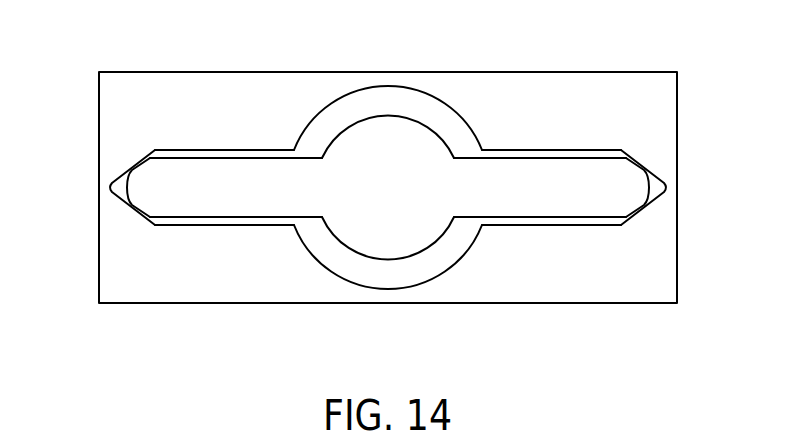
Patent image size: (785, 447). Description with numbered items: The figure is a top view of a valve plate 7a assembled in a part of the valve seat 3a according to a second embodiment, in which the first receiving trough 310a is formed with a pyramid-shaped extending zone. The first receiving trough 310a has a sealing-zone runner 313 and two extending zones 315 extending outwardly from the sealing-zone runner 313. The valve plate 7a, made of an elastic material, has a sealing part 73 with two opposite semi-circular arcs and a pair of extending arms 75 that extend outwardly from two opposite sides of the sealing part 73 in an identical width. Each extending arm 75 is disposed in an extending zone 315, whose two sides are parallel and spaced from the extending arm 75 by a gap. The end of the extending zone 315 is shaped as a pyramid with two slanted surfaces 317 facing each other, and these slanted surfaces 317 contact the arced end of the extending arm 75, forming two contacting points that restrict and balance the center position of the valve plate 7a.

The valve seat 3a is at (642, 88).
The valve plate 7a is at (388, 191).
The first receiving trough 310a is at (392, 152).
The sealing-zone runner 313 is at (388, 87).
The extending zone 315 is at (225, 150).
The slanted surface 317 is at (151, 157).
The sealing part 73 is at (385, 235).
The extending arm 75 is at (212, 197).